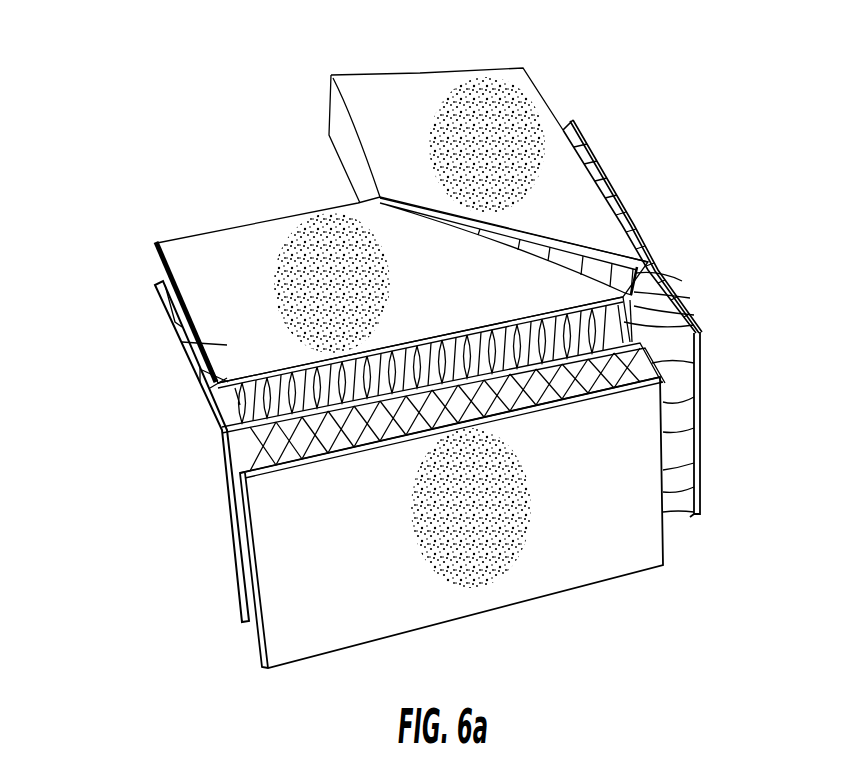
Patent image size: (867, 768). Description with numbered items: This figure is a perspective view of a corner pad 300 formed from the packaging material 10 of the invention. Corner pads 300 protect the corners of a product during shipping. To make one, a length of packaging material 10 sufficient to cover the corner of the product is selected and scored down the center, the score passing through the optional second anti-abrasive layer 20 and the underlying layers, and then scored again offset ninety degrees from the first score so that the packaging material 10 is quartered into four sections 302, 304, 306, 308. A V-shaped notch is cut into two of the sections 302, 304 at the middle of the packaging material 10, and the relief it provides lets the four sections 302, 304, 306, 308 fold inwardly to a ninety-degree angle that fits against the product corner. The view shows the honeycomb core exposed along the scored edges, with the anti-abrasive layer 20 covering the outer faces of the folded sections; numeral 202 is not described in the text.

The corner pad 300 is at (214, 96).
The section 302 is at (200, 257).
The section 304 is at (415, 93).
The section 306 is at (278, 622).
The section 308 is at (700, 358).
The second anti-abrasive layer 20 is at (183, 343).
The honeycomb core 202 is at (200, 382).
The packaging material 10 is at (228, 498).